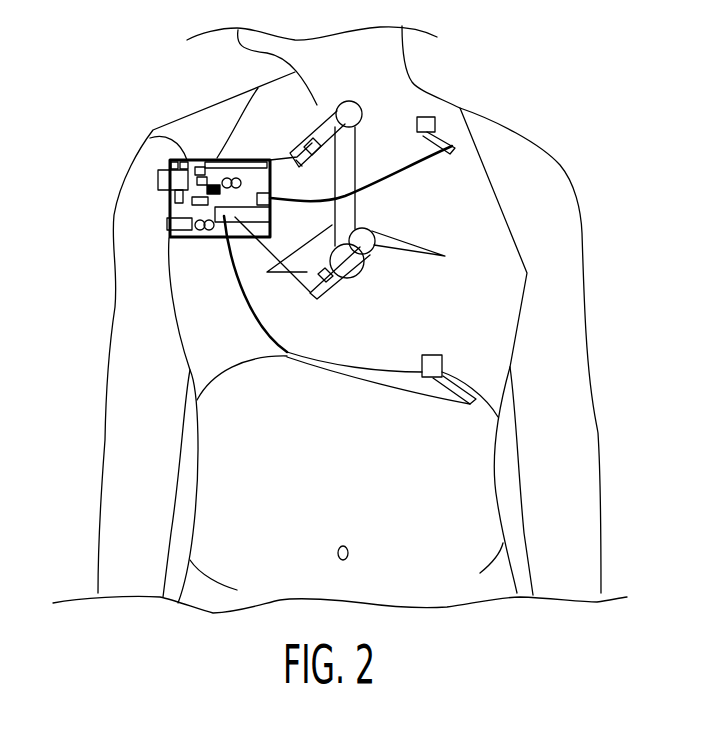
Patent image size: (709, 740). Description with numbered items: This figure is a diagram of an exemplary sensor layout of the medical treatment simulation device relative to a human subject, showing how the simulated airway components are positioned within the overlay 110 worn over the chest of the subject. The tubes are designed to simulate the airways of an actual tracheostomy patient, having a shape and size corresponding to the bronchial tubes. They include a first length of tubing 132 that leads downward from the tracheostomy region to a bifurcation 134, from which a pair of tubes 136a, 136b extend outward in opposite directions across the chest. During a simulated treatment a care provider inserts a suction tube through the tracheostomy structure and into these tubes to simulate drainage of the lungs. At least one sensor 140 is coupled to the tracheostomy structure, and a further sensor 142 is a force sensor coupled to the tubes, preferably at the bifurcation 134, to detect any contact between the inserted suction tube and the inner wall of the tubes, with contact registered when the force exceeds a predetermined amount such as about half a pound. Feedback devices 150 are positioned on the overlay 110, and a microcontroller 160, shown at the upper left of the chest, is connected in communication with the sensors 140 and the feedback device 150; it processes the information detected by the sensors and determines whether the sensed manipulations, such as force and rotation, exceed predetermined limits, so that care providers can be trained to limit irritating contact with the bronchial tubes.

The overlay 110 is at (378, 372).
The first length of tubing 132 is at (296, 145).
The bifurcation 134 is at (332, 225).
The tube 136a is at (334, 221).
The tube 136b is at (407, 254).
The sensor 140 is at (357, 110).
The sensor 142 is at (358, 226).
The feedback device 150 is at (460, 130).
The microcontroller 160 is at (150, 138).